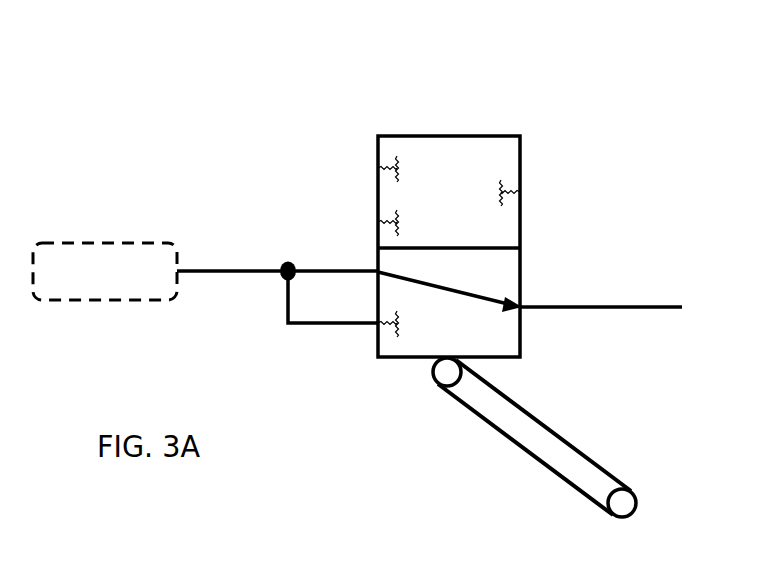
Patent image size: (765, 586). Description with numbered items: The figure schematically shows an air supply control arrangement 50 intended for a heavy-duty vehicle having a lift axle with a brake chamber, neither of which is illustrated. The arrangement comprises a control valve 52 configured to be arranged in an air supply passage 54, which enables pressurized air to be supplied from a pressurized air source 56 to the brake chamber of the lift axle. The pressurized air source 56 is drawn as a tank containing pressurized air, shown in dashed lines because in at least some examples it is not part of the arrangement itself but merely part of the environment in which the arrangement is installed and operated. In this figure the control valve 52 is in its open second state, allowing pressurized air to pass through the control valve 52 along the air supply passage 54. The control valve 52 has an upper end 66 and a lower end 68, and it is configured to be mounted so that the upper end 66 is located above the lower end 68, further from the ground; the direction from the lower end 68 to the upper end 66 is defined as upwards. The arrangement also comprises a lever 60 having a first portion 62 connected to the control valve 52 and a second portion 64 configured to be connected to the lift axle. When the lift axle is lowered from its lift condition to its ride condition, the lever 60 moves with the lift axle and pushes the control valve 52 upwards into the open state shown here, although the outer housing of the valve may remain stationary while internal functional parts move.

The air supply control arrangement 50 is at (216, 85).
The control valve 52 is at (378, 205).
The air supply passage 54 is at (223, 271).
The pressurized air source 56 is at (108, 243).
The lever 60 is at (510, 438).
The first portion 62 is at (447, 387).
The second portion 64 is at (604, 504).
The upper end 66 is at (393, 136).
The lower end 68 is at (397, 357).